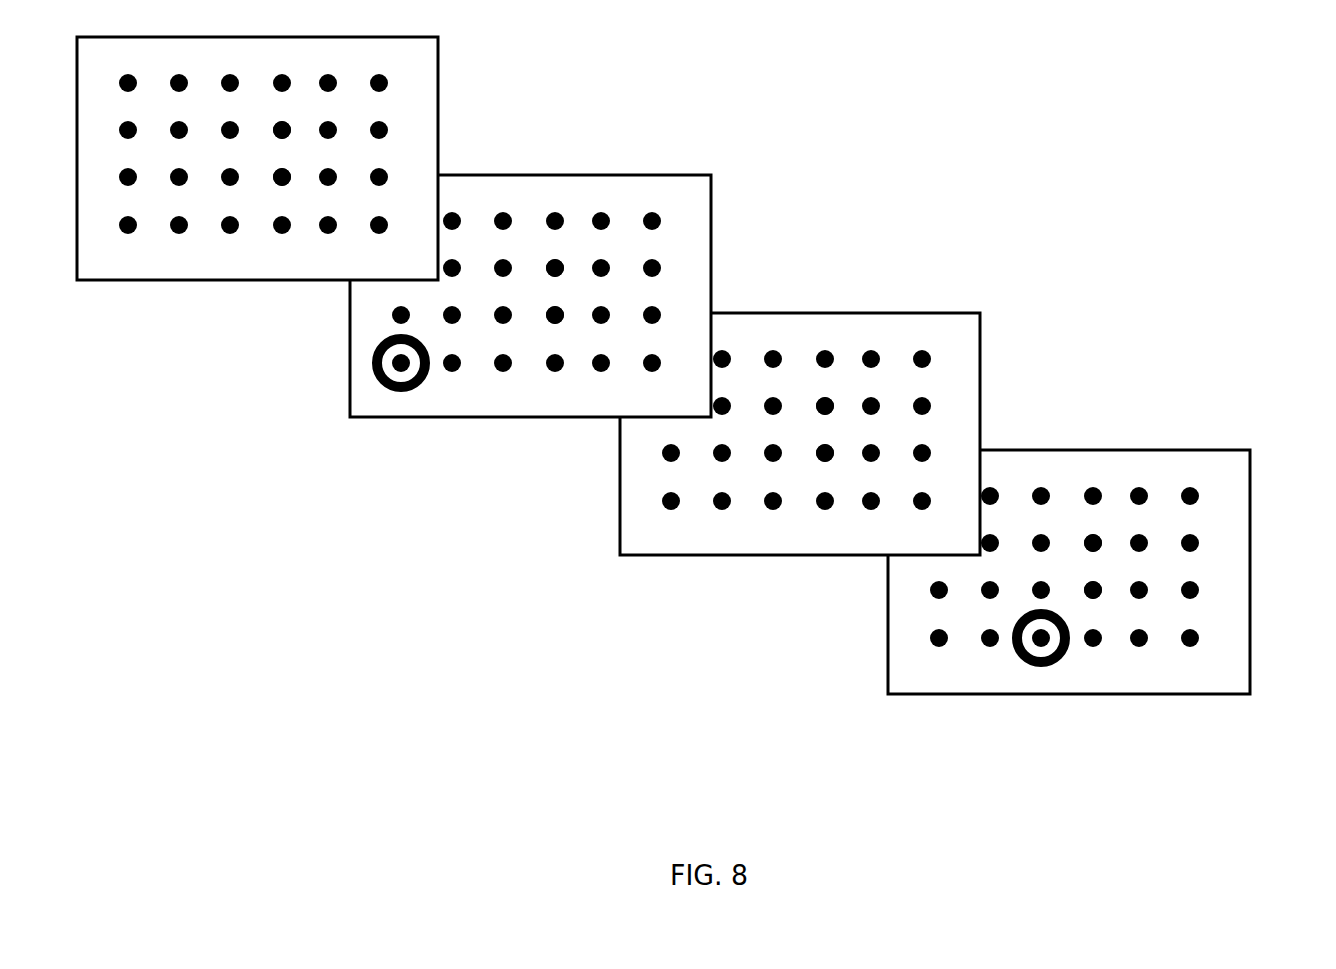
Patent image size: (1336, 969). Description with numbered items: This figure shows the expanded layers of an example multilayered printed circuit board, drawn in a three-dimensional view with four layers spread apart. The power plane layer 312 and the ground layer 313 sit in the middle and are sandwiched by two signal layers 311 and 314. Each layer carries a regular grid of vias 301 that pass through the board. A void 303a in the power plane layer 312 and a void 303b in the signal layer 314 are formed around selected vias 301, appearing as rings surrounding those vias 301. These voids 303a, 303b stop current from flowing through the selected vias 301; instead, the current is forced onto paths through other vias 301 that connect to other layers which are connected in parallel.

The electrode 301 is at (276, 177).
The void 303a is at (418, 382).
The void 303b is at (1057, 657).
The signal layer 311 is at (439, 65).
The power plane layer 312 is at (711, 222).
The ground layer 313 is at (980, 336).
The signal layer 314 is at (1250, 478).